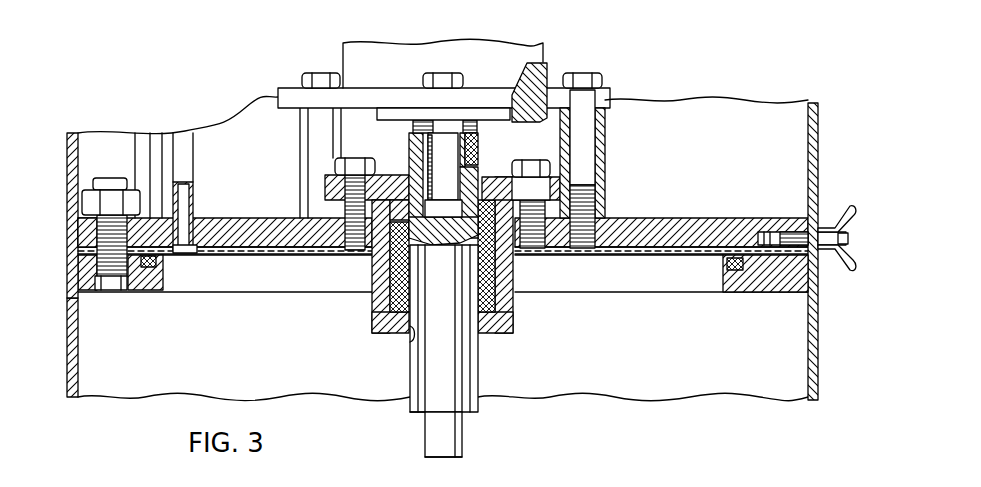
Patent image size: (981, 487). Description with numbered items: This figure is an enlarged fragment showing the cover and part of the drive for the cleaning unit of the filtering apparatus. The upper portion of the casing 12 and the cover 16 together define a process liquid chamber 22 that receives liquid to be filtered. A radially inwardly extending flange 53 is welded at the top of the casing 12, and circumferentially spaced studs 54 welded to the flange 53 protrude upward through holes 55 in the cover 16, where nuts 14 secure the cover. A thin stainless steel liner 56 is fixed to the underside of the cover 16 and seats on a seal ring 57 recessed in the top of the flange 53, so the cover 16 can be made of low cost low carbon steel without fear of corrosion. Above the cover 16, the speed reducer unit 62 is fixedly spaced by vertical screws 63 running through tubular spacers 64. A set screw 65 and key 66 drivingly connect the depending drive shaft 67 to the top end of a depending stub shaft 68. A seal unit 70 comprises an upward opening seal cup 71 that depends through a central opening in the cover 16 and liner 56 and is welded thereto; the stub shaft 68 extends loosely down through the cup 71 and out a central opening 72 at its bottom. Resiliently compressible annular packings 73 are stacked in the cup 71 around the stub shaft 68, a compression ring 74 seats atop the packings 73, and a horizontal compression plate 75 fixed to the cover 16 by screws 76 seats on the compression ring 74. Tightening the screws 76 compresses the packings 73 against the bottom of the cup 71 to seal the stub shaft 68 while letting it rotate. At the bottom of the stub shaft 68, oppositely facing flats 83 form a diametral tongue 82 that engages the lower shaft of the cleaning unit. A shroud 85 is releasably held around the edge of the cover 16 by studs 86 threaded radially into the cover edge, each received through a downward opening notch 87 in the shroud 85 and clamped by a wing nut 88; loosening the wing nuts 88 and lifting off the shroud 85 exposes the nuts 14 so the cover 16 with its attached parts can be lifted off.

The casing 12 is at (68, 318).
The nuts 14 is at (113, 192).
The cover 16 is at (227, 225).
The process liquid chamber 22 is at (810, 362).
The flange 53 is at (142, 282).
The studs 54 is at (104, 288).
The holes 55 is at (78, 238).
The liner 56 is at (243, 252).
The seal ring 57 is at (160, 262).
The speed reducer unit 62 is at (492, 48).
The vertical screws 63 is at (583, 78).
The tubular spacers 64 is at (603, 128).
The set screw 65 is at (482, 162).
The key 66 is at (423, 168).
The drive shaft 67 is at (443, 147).
The stub shaft 68 is at (462, 363).
The seal unit 70 is at (522, 332).
The seal cup 71 is at (518, 312).
The central opening 72 is at (410, 345).
The annular packings 73 is at (390, 292).
The compression ring 74 is at (500, 215).
The compression plate 75 is at (325, 187).
The screws 76 is at (340, 165).
The tongue 82 is at (433, 442).
The flats 83 is at (425, 432).
The shroud 85 is at (67, 162).
The studs 86 is at (795, 232).
The notch 87 is at (818, 267).
The wing nut 88 is at (837, 262).